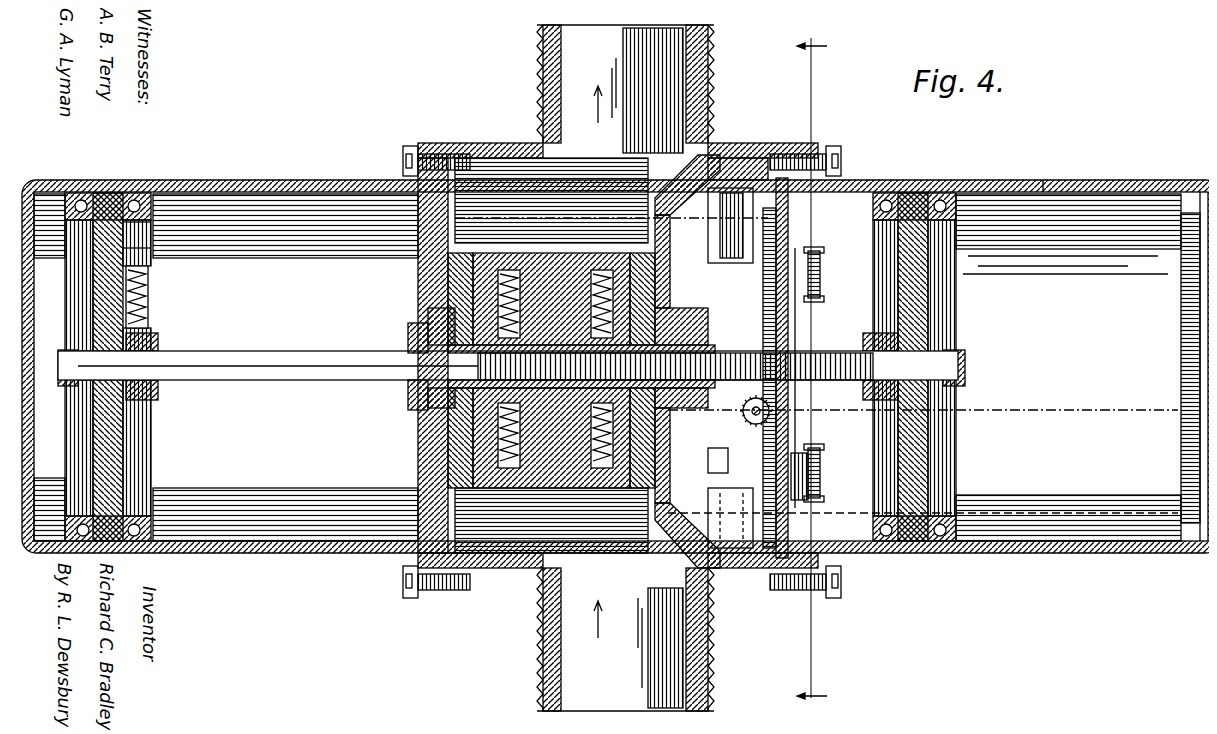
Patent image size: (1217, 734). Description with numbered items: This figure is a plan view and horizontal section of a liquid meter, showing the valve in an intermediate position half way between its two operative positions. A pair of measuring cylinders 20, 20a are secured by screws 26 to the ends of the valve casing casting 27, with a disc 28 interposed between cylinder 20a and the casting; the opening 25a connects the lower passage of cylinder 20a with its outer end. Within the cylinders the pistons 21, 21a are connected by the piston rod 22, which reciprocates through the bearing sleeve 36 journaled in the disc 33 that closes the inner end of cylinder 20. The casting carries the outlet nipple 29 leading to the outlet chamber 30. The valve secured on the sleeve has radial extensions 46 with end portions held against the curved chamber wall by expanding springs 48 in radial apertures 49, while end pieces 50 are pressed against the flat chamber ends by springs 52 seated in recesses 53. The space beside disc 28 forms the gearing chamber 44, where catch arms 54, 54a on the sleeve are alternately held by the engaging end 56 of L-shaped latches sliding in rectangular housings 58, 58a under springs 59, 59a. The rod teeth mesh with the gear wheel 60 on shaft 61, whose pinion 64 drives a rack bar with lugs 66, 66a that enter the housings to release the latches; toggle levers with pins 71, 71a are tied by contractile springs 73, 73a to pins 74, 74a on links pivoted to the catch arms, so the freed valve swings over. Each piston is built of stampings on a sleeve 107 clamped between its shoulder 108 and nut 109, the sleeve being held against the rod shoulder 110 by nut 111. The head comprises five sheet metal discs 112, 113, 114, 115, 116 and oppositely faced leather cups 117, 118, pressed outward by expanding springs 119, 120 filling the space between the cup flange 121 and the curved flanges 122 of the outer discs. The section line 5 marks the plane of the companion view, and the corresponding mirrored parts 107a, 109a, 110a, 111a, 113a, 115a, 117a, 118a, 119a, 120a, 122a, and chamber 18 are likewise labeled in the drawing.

The section line 5- 5 is at (812, 374).
The valve chamber 18 is at (543, 478).
The measuring cylinder 20 is at (283, 173).
The measuring cylinder 20a is at (1035, 173).
The piston 21 is at (102, 186).
The piston 21a is at (902, 187).
The piston rod 22 is at (280, 345).
The opening 25a is at (1185, 470).
The screws 26 is at (402, 140).
The valve casing casting 27 is at (510, 590).
The disc 28 is at (782, 422).
The outlet nipple 29 is at (625, 89).
The outlet chamber 30 is at (610, 175).
The disc 33 is at (405, 400).
The bearing sleeve 36 is at (405, 340).
The gearing chamber 44 is at (662, 268).
The radial extensions 46 is at (650, 310).
The helically coiled expanding springs 48 is at (551, 365).
The radial apertures 49 is at (648, 260).
The end pieces 50 is at (418, 290).
The helically coiled expanding springs 52 is at (418, 308).
The recesses 53 is at (418, 272).
The catch arm 54 is at (710, 462).
The catch arm 54a is at (700, 320).
The engaging end of latch 56 is at (708, 467).
The rectangular housing 58 is at (710, 489).
The rectangular housing 58a is at (740, 195).
The helically coiled expanding spring 59 is at (733, 585).
The helically coiled expanding spring 59a is at (747, 148).
The gear wheel 60 is at (772, 400).
The shaft 61 is at (778, 450).
The gear pinion 64 is at (768, 425).
The projecting lug 66 is at (726, 500).
The projecting lug 66a is at (690, 315).
The pin 71 is at (812, 483).
The pin 71a is at (812, 248).
The helically coiled contractile spring 73 is at (817, 465).
The helically coiled contractile spring 73a is at (815, 268).
The pin 74 is at (815, 440).
The pin 74a is at (810, 290).
The sleeve 107 is at (80, 400).
The piston plate 107a is at (935, 398).
The shoulder 108 is at (72, 332).
The nut 109 is at (148, 338).
The collar 109a is at (862, 335).
The shoulder 110 is at (147, 348).
The sleeve 110a is at (790, 410).
The nut 111 is at (80, 378).
The nut 111a is at (957, 360).
The sheet metal disc 112 is at (88, 432).
The sheet metal disc 113 is at (88, 447).
The packing plate 113a is at (917, 455).
The sheet metal disc 114 is at (100, 186).
The sheet metal disc 115 is at (130, 216).
The piston ring 115a is at (890, 455).
The sheet metal disc 116 is at (127, 238).
The leather cup 117 is at (90, 297).
The piston plate 117a is at (927, 294).
The leather cup 118 is at (128, 317).
The spring 118a is at (900, 330).
The helically coiled expanding spring 119 is at (75, 192).
The piston bolt 119a is at (935, 185).
The helically coiled expanding spring 120 is at (125, 190).
The piston plate 120a is at (878, 193).
The flange 121 is at (88, 186).
The curved flange 122 is at (68, 510).
The piston bolt 122a is at (885, 512).